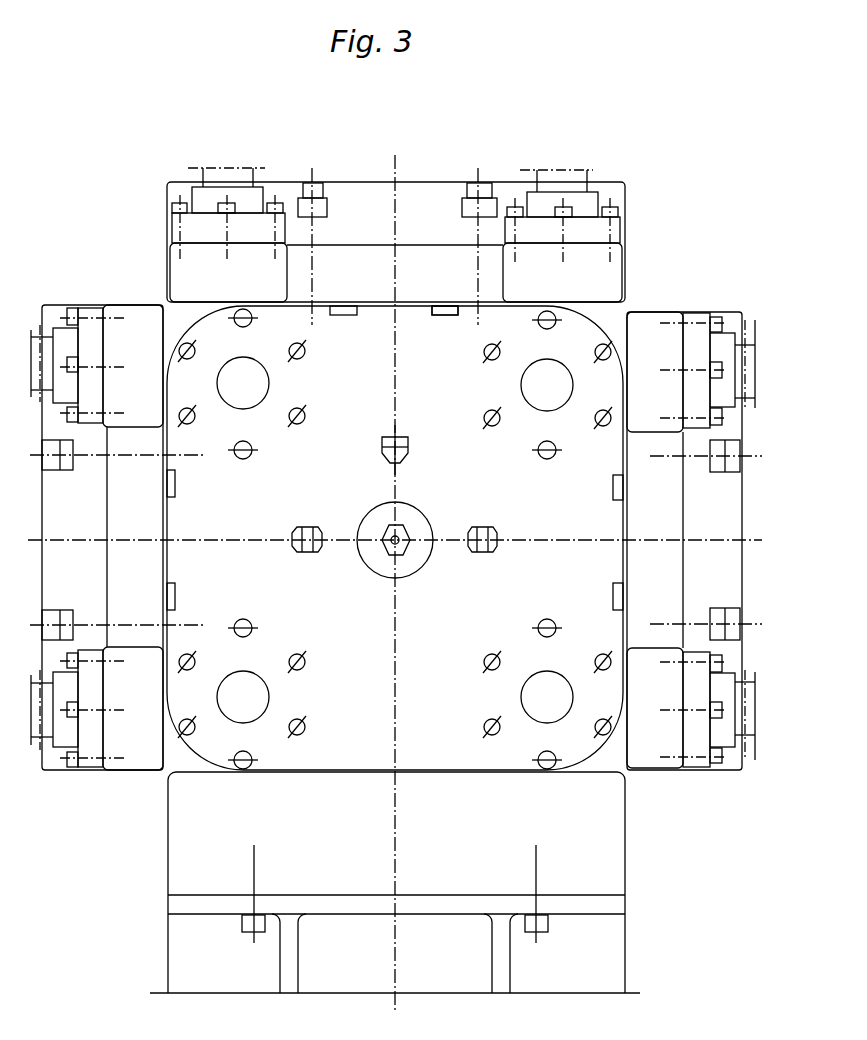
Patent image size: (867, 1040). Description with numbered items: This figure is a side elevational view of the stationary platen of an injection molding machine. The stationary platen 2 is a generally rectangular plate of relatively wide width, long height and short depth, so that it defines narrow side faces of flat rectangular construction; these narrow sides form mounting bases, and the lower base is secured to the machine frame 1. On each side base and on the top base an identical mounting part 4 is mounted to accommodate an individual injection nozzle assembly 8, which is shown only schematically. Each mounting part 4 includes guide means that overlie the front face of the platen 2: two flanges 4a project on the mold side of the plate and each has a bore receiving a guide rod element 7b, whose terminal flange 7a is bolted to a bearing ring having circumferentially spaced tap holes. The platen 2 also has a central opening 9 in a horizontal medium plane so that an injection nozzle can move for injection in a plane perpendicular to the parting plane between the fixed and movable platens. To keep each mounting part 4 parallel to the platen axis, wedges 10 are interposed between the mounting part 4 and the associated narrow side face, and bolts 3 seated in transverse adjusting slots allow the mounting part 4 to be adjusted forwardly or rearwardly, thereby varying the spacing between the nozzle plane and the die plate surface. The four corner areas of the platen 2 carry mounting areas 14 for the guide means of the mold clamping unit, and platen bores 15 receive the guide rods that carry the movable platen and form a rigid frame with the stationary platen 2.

The frame 1 is at (614, 904).
The stationary platen 2 is at (368, 774).
The bolts 3 is at (480, 192).
The mounting part 4 is at (410, 198).
The flanges 4a is at (174, 268).
The terminal flanges 7a is at (172, 241).
The guide rod elements 7b is at (236, 176).
The injection nozzle assembly 8 is at (381, 538).
The central opening 9 is at (368, 561).
The wedges 10 is at (446, 316).
The mounting areas 14 is at (292, 380).
The platen bores 15 is at (531, 410).